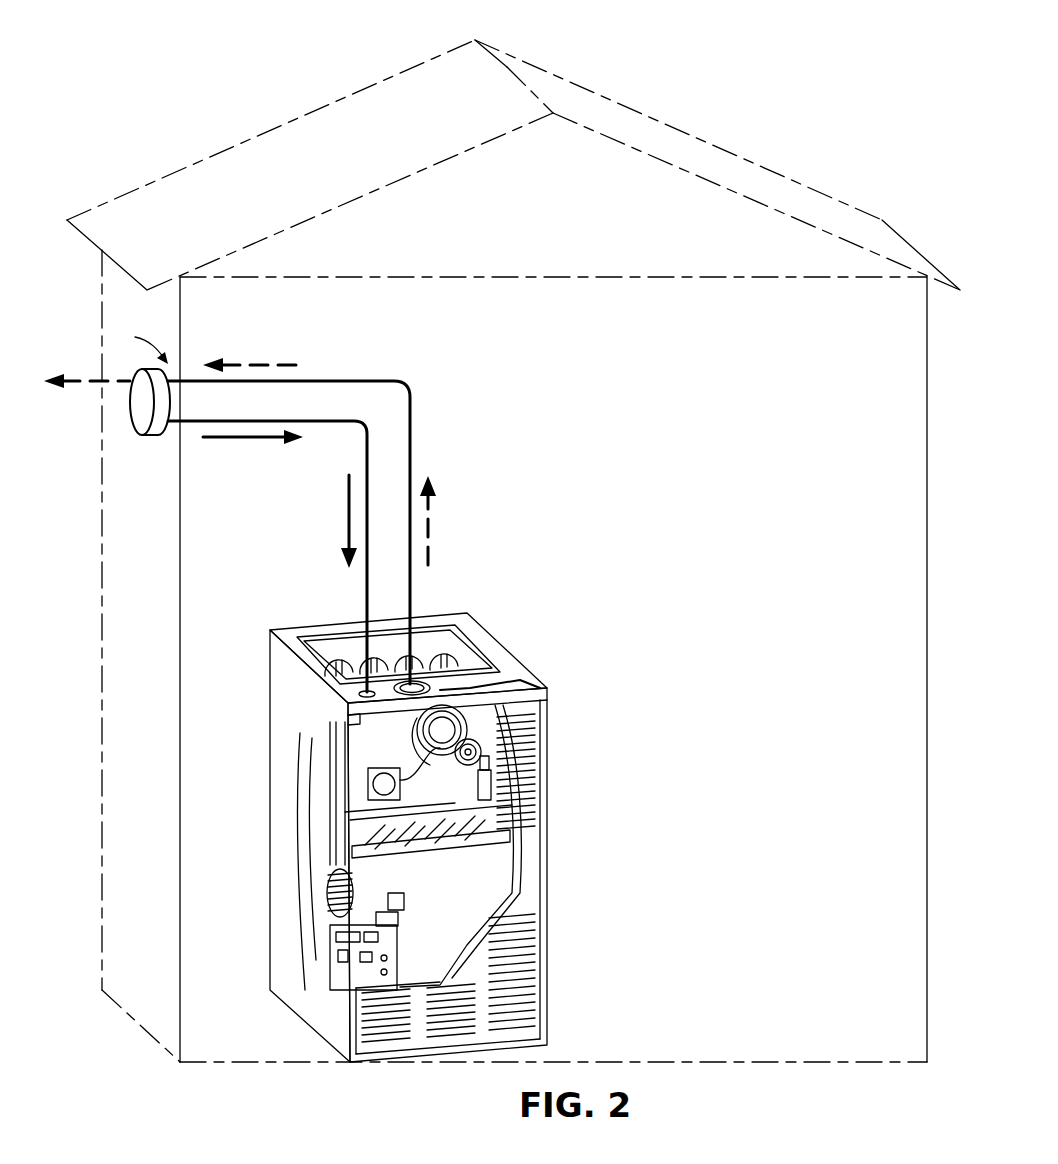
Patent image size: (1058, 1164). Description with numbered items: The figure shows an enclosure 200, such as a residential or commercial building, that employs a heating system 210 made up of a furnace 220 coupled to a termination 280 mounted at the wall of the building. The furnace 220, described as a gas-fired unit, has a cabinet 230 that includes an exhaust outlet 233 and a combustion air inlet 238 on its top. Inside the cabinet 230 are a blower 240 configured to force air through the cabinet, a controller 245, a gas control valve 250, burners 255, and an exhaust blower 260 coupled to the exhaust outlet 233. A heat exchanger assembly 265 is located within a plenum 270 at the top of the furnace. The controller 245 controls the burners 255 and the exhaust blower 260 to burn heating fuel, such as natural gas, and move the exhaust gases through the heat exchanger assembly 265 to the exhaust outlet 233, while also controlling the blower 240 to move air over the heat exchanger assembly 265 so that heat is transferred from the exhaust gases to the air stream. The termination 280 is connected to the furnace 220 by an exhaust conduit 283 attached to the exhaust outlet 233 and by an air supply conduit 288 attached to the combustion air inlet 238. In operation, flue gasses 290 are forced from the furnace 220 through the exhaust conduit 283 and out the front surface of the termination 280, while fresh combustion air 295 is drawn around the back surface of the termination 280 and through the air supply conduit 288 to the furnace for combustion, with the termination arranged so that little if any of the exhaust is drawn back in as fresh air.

The enclosure 200 is at (226, 143).
The heating system 210 is at (588, 443).
The furnace 220 is at (620, 929).
The cabinet 230 is at (268, 670).
The exhaust outlet 233 is at (523, 683).
The combustion air inlet 238 is at (350, 700).
The blower 240 is at (323, 910).
The controller 245 is at (347, 968).
The gas control valve 250 is at (515, 763).
The burners 255 is at (500, 837).
The exhaust blower 260 is at (503, 733).
The heat exchanger assembly 265 is at (343, 642).
The plenum 270 is at (430, 637).
The termination 280 is at (122, 414).
The exhaust conduit 283 is at (395, 380).
The air supply conduit 288 is at (360, 455).
The flue gasses 290 is at (105, 378).
The fresh combustion air 295 is at (162, 445).